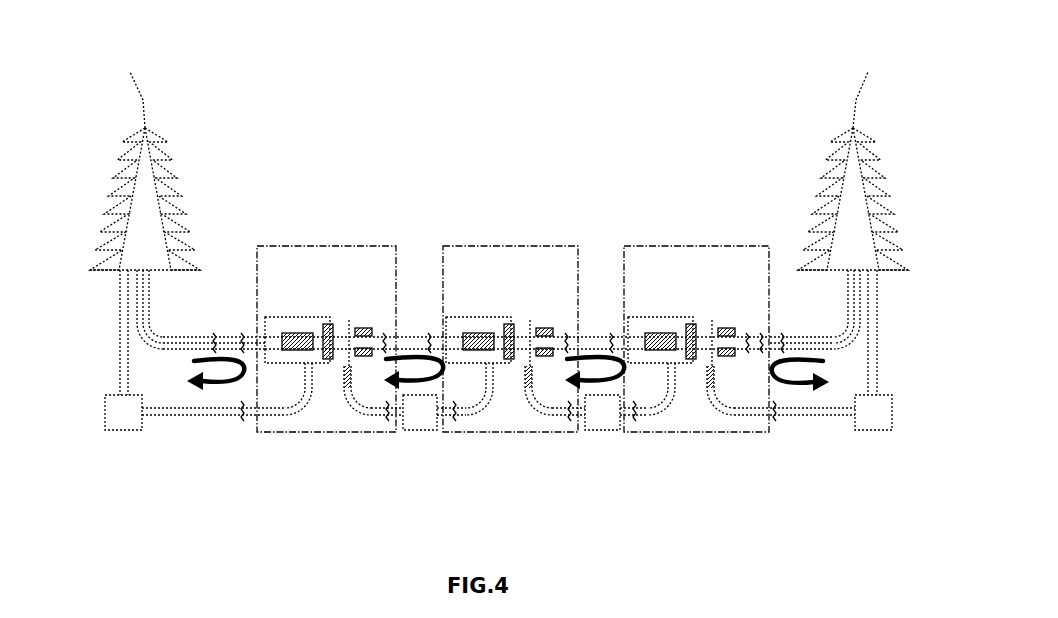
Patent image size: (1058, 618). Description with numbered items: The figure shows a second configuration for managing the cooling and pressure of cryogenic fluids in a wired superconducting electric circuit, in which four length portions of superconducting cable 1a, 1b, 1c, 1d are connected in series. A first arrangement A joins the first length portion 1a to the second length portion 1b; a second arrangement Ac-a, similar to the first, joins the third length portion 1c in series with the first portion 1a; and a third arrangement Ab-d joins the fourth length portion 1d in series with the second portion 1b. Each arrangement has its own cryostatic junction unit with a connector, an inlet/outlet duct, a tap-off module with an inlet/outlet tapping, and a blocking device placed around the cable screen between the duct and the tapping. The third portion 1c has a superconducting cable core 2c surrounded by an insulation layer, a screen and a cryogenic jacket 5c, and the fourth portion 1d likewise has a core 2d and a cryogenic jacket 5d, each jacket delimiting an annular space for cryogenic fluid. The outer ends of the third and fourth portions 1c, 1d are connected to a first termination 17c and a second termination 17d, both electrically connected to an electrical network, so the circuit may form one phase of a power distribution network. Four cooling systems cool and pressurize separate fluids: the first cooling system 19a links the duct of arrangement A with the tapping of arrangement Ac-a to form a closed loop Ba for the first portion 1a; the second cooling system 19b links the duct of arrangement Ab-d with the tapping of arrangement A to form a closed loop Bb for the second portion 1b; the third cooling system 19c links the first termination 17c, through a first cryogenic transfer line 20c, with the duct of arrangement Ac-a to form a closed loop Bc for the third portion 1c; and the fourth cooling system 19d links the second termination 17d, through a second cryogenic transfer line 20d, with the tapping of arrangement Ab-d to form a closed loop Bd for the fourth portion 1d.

The first length portion of superconducting cable 1a is at (428, 324).
The second length portion of superconducting cable 1b is at (610, 324).
The third length portion of superconducting cable 1c is at (240, 322).
The fourth length portion of superconducting cable 1d is at (760, 320).
The superconducting cable core 2c is at (203, 337).
The superconducting cable core 2d is at (812, 337).
The cryogenic jacket 5c is at (183, 335).
The cryogenic jacket 5d is at (795, 335).
The first termination 17c is at (122, 225).
The second termination 17d is at (868, 232).
The first cooling system 19a is at (420, 420).
The second cooling system 19b is at (602, 420).
The third cooling system 19c is at (117, 415).
The fourth cooling system 19d is at (883, 412).
The first cryogenic transfer line 20c is at (118, 360).
The second cryogenic transfer line 20d is at (879, 361).
The first arrangement A is at (477, 238).
The second arrangement Ac-a is at (308, 238).
The third arrangement Ab-d is at (634, 238).
The closed loop Ba is at (400, 373).
The closed loop Bb is at (580, 373).
The closed loop Bc is at (199, 374).
The closed loop Bd is at (816, 375).